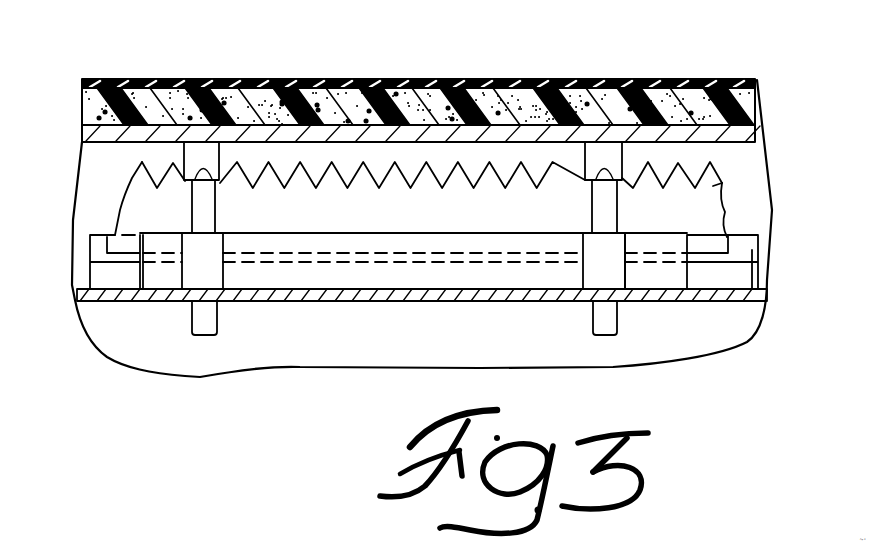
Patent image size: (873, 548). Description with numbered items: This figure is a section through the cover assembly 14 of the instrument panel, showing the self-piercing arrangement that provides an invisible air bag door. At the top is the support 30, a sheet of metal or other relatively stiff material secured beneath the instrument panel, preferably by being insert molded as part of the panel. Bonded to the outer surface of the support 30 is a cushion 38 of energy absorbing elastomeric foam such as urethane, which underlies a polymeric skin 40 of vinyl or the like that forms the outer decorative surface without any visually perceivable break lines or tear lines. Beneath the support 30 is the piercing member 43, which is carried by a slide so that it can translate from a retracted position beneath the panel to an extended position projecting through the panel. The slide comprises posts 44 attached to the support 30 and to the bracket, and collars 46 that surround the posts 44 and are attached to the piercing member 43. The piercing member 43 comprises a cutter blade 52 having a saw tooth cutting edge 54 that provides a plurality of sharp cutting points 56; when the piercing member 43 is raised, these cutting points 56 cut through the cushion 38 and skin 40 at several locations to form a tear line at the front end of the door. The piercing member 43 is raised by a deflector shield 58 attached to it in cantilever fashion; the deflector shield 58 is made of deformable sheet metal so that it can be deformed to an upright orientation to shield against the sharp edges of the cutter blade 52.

The cover assembly 14 is at (421, 75).
The cushion 38 is at (218, 100).
The skin 40 is at (339, 80).
The support 30 is at (90, 145).
The cutting points 56 is at (717, 162).
The saw tooth cutting edge 54 is at (716, 185).
The cutter blade 52 is at (714, 213).
The deflector shield 58 is at (750, 248).
The piercing member 43 is at (343, 262).
The posts 44 is at (207, 210).
The collars 46 is at (192, 270).